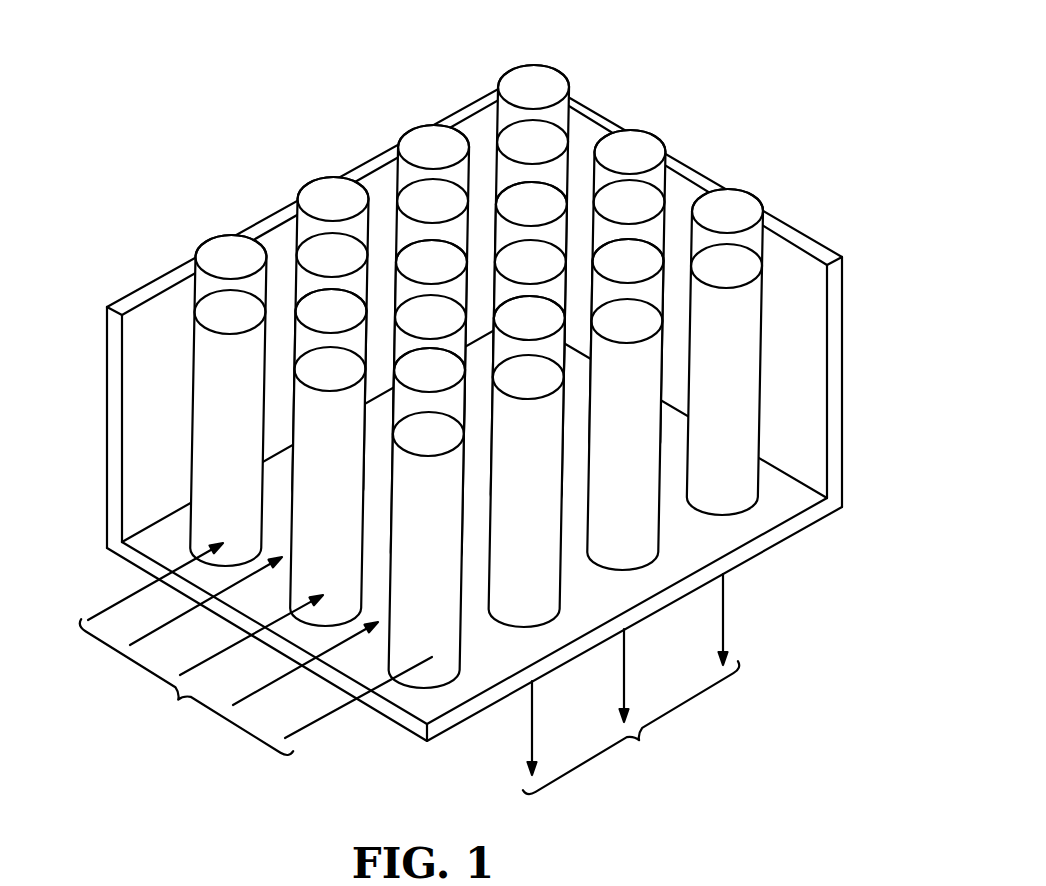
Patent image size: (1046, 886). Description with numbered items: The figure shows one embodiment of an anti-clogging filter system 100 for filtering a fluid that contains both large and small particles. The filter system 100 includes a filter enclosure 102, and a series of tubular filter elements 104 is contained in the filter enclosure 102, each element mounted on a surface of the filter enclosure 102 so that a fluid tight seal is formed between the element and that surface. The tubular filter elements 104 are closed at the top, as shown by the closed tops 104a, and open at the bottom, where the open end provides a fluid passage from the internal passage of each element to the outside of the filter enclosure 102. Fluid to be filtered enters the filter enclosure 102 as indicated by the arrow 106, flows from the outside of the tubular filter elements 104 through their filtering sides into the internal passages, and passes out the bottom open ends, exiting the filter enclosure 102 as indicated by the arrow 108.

The anti-clogging filter system 100 is at (618, 50).
The filter enclosure 102 is at (797, 230).
The tubular filter elements 104 is at (232, 552).
The closed tops 104a is at (412, 197).
The arrow (fluid entering) 106 is at (256, 649).
The arrow (fluid exiting) 108 is at (631, 684).